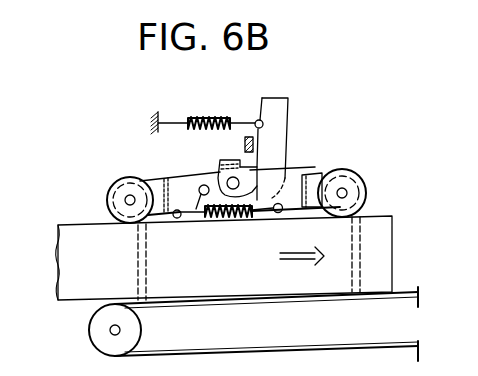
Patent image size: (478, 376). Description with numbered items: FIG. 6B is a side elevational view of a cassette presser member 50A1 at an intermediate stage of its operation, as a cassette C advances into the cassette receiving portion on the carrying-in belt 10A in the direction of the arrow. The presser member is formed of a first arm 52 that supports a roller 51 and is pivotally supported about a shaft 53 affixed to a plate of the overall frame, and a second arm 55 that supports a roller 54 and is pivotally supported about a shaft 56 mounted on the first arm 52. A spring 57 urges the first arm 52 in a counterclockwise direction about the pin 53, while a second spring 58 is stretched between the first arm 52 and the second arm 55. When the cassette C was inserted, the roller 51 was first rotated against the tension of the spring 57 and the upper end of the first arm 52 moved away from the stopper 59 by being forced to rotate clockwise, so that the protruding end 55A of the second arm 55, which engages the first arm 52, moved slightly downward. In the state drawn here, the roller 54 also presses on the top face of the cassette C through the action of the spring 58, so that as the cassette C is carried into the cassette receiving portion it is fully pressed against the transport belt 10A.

The carrying-in belt 10A is at (270, 308).
The cassette presser member 50A1 is at (290, 96).
The roller 51 is at (117, 178).
The first arm 52 is at (178, 185).
The shaft 53 is at (204, 196).
The roller 54 is at (362, 174).
The second arm 55 is at (308, 183).
The protruding end 55A is at (230, 158).
The shaft 56 is at (237, 190).
The spring 57 is at (205, 118).
The second spring 58 is at (232, 218).
The stopper 59 is at (256, 140).
The cassette C is at (77, 225).